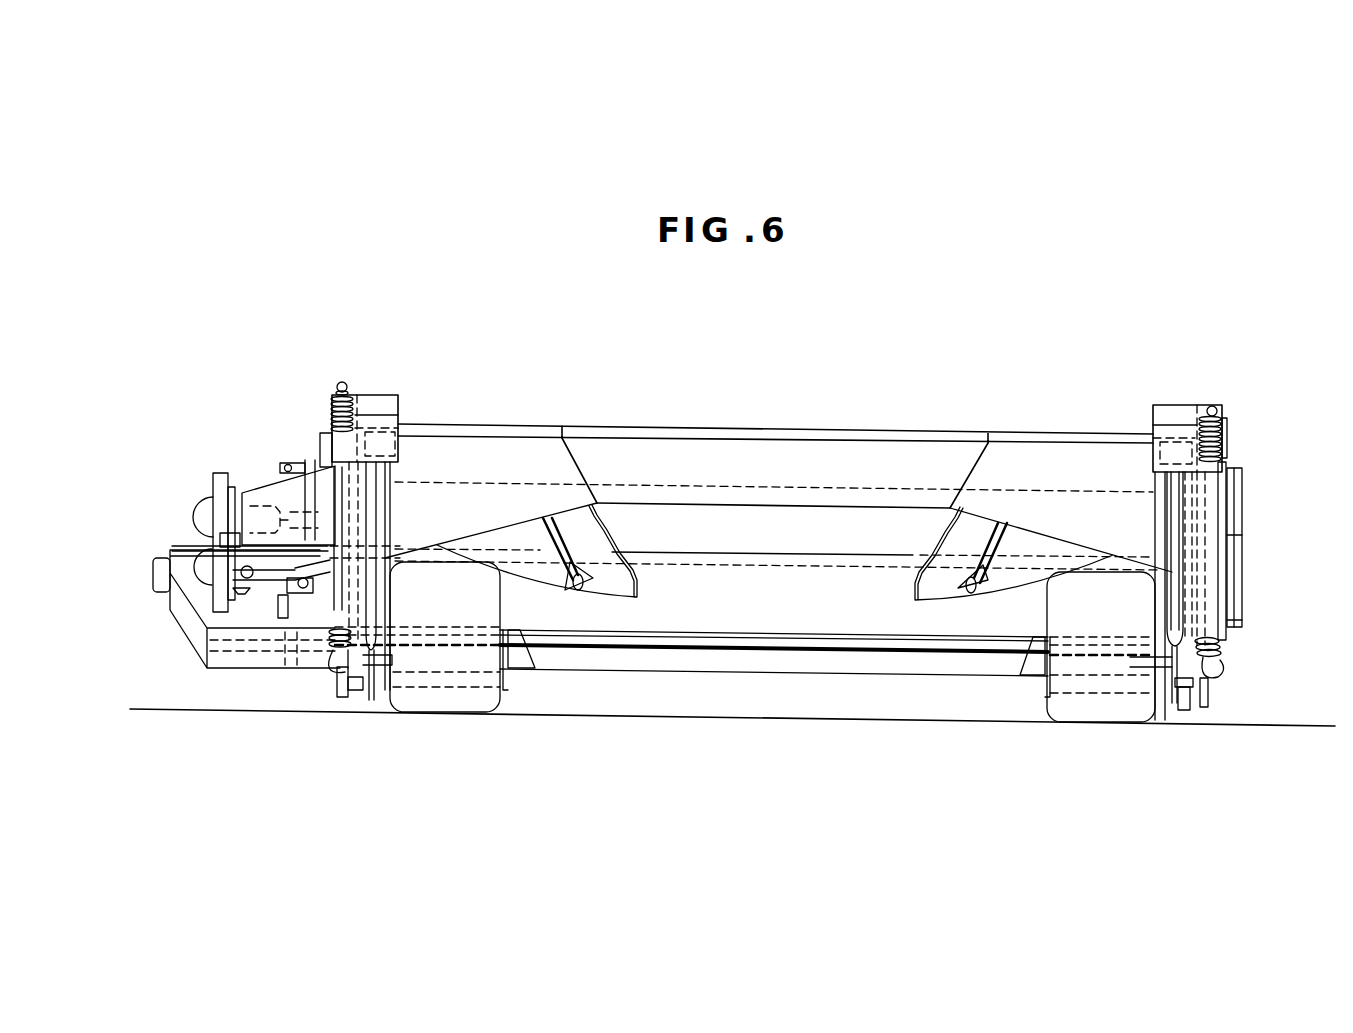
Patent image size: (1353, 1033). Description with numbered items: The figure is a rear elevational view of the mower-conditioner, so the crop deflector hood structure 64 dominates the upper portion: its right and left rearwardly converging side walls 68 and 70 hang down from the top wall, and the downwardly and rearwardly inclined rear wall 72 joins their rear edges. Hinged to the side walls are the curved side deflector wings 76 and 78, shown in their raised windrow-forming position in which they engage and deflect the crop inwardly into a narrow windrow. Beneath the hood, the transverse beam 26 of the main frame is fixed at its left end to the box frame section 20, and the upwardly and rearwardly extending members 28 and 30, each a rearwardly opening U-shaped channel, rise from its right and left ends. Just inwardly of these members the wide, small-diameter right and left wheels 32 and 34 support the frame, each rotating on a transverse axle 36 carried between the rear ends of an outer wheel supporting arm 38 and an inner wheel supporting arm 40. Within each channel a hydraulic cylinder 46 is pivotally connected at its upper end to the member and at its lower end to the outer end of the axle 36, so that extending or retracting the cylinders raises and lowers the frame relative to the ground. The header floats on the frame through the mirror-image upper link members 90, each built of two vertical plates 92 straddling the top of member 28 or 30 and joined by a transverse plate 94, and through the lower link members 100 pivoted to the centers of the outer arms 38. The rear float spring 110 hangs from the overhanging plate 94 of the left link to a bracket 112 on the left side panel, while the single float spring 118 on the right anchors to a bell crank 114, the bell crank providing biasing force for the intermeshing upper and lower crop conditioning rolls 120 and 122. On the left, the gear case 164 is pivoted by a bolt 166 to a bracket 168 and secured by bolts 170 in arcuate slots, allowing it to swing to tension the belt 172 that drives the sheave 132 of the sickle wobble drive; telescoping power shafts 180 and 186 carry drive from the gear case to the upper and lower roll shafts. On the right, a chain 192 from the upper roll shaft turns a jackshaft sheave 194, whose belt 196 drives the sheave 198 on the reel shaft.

The box frame section 20 is at (185, 612).
The transverse beam 26 is at (786, 665).
The upwardly and rearwardly extending member 28 is at (1200, 520).
The upwardly and rearwardly extending member 30 is at (390, 500).
The right wheel 32 is at (1050, 712).
The left wheel 34 is at (490, 704).
The transverse axle 36 is at (452, 636).
The outer wheel supporting arm 38 is at (377, 662).
The inner wheel supporting arm 40 is at (535, 660).
The hydraulic cylinder 46 is at (387, 526).
The crop deflector hood structure 64 is at (882, 394).
The right side wall 68 is at (1062, 452).
The left side wall 70 is at (516, 452).
The rear wall 72 is at (776, 467).
The side deflector wing 76 is at (1008, 580).
The side deflector wing 78 is at (543, 575).
The upper link member 90 is at (416, 395).
The vertical plate 92 is at (385, 402).
The transverse plate 94 is at (352, 406).
The lower link member 100 is at (344, 690).
The rear float spring 110 is at (332, 418).
The bracket 112 is at (340, 672).
The bell crank 114 is at (1221, 653).
The float spring 118 is at (1222, 430).
The upper crop conditioning roll 120 is at (668, 517).
The lower crop conditioning roll 122 is at (703, 614).
The drive sheave 132 is at (290, 620).
The gear case 164 is at (222, 478).
The bolt 166 is at (225, 527).
The bracket 168 is at (305, 487).
The bolt 170 is at (275, 482).
The belt 172 is at (285, 600).
The telescoping power shaft 180 is at (293, 462).
The telescoping power shaft 186 is at (235, 545).
The chain 192 is at (1225, 478).
The sheave 194 is at (1245, 482).
The belt 196 is at (1236, 545).
The sheave 198 is at (1242, 607).